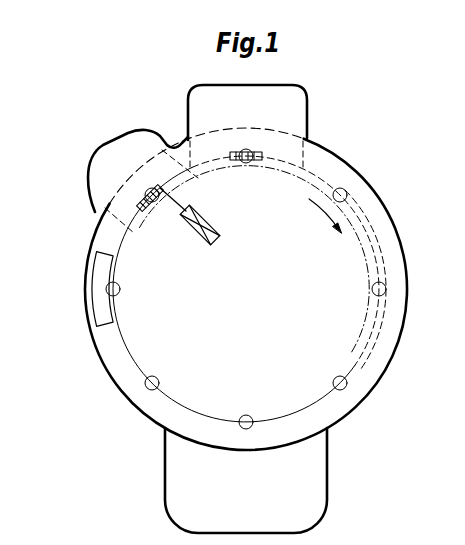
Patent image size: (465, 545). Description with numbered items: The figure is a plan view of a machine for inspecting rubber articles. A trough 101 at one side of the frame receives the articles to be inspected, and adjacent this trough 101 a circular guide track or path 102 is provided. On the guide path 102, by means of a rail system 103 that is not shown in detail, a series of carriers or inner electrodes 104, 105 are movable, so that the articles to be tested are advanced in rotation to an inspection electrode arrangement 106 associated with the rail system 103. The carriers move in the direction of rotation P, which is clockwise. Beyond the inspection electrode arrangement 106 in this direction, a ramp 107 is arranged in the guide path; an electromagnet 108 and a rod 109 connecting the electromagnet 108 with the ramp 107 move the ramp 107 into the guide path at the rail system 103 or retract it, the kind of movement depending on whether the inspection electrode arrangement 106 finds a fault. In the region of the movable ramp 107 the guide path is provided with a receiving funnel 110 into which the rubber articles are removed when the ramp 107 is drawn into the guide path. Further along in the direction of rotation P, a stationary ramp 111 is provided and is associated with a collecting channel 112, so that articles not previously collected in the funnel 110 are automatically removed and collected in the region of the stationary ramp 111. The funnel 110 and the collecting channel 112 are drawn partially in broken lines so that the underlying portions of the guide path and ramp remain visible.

The trough 101 is at (180, 497).
The guide track or path 102 is at (374, 252).
The rail system 103 is at (376, 327).
The carrier or inner electrode 104 is at (383, 287).
The carrier or inner electrode 105 is at (345, 388).
The inspection electrode arrangement 106 is at (101, 300).
The ramp 107 is at (143, 199).
The electromagnet 108 is at (216, 222).
The rod 109 is at (175, 208).
The receiving funnel 110 is at (115, 160).
The stationary ramp 111 is at (258, 152).
The collecting channel 112 is at (203, 108).
The direction of rotation P is at (341, 228).